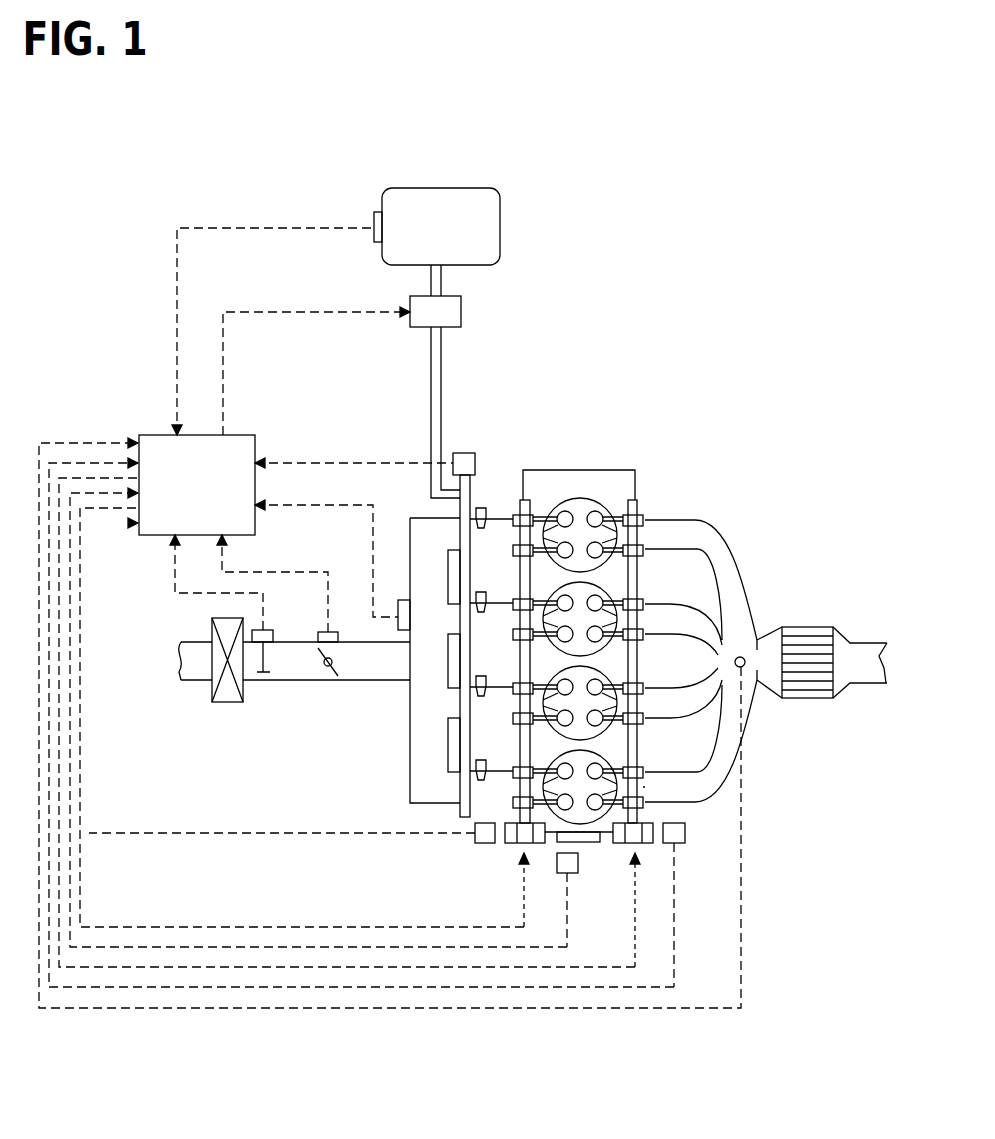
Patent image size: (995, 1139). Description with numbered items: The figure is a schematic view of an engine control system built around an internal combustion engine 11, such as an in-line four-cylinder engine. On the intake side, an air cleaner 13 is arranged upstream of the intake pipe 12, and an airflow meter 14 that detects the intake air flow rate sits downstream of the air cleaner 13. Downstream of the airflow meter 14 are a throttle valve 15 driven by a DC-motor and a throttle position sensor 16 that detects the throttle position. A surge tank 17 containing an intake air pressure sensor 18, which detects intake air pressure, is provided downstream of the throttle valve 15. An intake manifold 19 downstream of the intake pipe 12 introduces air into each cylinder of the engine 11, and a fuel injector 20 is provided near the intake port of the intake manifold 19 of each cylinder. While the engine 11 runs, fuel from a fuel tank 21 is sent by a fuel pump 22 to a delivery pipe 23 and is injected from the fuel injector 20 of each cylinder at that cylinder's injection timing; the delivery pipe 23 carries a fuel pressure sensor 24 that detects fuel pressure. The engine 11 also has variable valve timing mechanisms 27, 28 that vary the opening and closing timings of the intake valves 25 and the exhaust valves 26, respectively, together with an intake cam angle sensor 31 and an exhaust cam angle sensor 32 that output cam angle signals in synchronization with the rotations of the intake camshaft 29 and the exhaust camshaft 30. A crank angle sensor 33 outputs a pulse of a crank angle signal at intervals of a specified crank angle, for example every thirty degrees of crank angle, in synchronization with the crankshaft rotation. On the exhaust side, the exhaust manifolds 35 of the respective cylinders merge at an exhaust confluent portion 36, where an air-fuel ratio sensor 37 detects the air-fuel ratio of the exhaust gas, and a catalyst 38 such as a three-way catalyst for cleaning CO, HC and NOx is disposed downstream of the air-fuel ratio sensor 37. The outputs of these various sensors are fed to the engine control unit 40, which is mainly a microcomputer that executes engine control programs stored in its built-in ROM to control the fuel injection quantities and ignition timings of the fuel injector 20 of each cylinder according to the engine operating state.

The internal combustion engine 11 is at (585, 470).
The intake pipe 12 is at (320, 682).
The air cleaner 13 is at (233, 702).
The airflow meter 14 is at (275, 660).
The throttle valve 15 is at (340, 675).
The throttle position sensor 16 is at (330, 630).
The surge tank 17 is at (420, 780).
The intake air pressure sensor 18 is at (400, 600).
The intake manifold 19 is at (500, 528).
The fuel injector 20 is at (489, 503).
The fuel tank 21 is at (500, 225).
The fuel pump 22 is at (461, 310).
The delivery pipe 23 is at (446, 480).
The fuel pressure sensor 24 is at (472, 455).
The intake valves 25 is at (575, 498).
The exhaust valves 26 is at (604, 470).
The variable valve timing mechanism 27 is at (538, 843).
The variable valve timing mechanism 28 is at (648, 843).
The intake camshaft 29 is at (512, 787).
The exhaust camshaft 30 is at (643, 787).
The intake cam angle sensor 31 is at (483, 843).
The exhaust cam angle sensor 32 is at (685, 835).
The crank angle sensor 33 is at (578, 868).
The exhaust manifolds 35 is at (680, 513).
The exhaust confluent portion 36 is at (763, 627).
The air-fuel ratio sensor 37 is at (748, 666).
The catalyst 38 is at (833, 660).
The engine control unit 40 is at (243, 435).